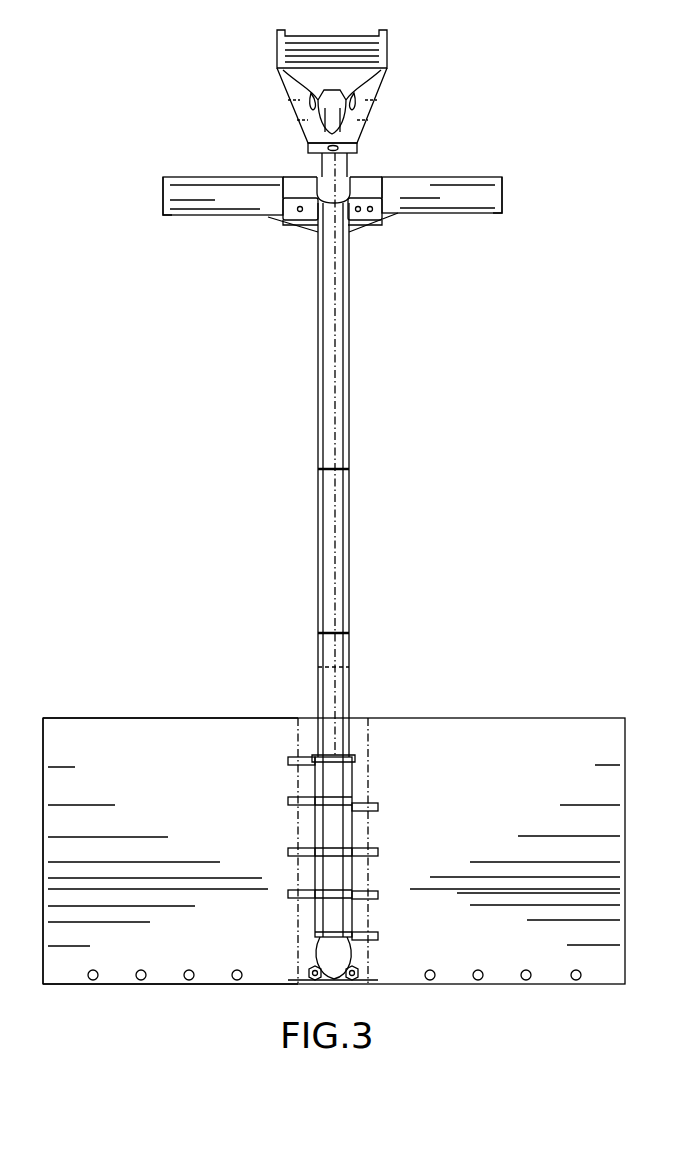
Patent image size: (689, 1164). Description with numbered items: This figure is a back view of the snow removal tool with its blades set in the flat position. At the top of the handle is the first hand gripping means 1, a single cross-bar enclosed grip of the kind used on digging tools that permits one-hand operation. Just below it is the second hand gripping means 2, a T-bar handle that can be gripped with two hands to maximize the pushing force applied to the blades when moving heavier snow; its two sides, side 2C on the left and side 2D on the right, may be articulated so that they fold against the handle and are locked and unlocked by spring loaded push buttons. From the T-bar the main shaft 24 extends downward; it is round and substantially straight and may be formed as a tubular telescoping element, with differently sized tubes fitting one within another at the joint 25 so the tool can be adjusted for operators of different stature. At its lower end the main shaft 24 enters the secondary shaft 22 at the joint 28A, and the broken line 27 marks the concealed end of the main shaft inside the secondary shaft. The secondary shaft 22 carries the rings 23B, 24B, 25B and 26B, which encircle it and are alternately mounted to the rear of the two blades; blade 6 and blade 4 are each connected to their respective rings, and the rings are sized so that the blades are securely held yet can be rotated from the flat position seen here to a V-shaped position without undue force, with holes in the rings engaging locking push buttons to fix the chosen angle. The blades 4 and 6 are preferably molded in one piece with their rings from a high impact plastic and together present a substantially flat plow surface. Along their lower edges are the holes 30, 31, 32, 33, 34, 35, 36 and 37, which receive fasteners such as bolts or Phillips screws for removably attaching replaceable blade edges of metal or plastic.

The first hand gripping means 1 is at (389, 54).
The second hand gripping means 2 is at (205, 178).
The side of the T-bar handle 2C is at (163, 214).
The side of the T-bar handle 2D is at (500, 212).
The main shaft 24 is at (343, 452).
The joint 25 is at (364, 476).
The joint 28A is at (362, 637).
The broken line 27 is at (312, 673).
The secondary shaft 22 is at (338, 746).
The ring 23B is at (333, 778).
The ring 24B is at (335, 830).
The ring 25B is at (337, 880).
The ring 26B is at (340, 920).
The blade 4 is at (495, 720).
The blade 6 is at (120, 720).
The hole 30 is at (96, 981).
The hole 31 is at (144, 981).
The hole 32 is at (192, 981).
The hole 33 is at (239, 981).
The hole 34 is at (433, 981).
The hole 35 is at (481, 981).
The hole 36 is at (529, 981).
The hole 37 is at (578, 981).